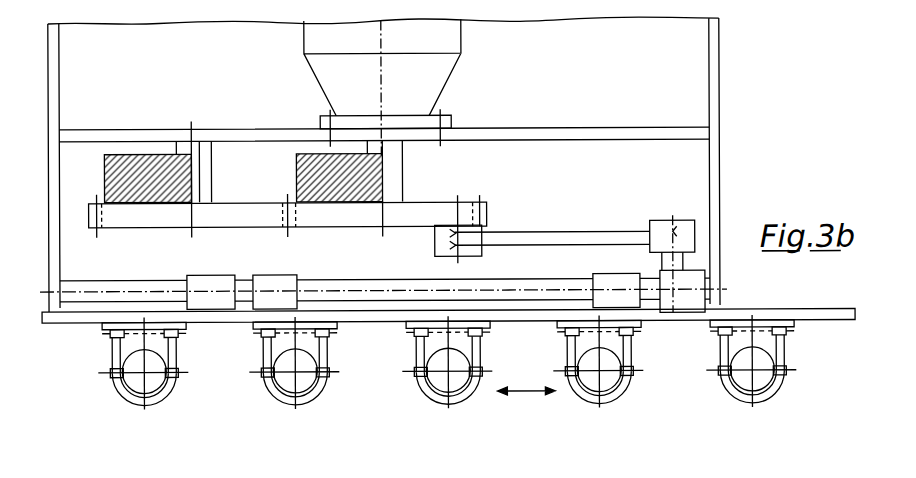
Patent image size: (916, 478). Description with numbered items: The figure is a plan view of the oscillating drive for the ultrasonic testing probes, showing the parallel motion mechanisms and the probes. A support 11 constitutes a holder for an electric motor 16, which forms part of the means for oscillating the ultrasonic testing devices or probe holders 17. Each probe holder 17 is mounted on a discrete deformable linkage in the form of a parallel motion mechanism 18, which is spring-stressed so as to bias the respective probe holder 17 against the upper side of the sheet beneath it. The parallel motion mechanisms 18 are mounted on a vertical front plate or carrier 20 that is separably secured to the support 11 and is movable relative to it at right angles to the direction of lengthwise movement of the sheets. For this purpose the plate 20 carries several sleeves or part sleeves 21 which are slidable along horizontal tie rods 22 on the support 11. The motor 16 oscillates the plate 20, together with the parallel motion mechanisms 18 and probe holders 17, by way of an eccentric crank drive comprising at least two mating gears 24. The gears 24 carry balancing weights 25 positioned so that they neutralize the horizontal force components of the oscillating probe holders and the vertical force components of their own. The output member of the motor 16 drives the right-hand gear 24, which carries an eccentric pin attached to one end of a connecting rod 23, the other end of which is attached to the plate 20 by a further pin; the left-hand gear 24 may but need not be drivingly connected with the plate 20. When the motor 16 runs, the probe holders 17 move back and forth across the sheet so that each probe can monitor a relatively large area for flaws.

The support 11 is at (715, 150).
The electric motor 16 is at (453, 36).
The probe holders 17 is at (322, 388).
The parallel motion mechanism 18 is at (112, 345).
The front plate 20 is at (823, 323).
The sleeves 21 is at (270, 300).
The tie rods 22 is at (387, 296).
The connecting rod 23 is at (567, 243).
The gears 24 is at (210, 217).
The balancing weights 25 is at (161, 156).